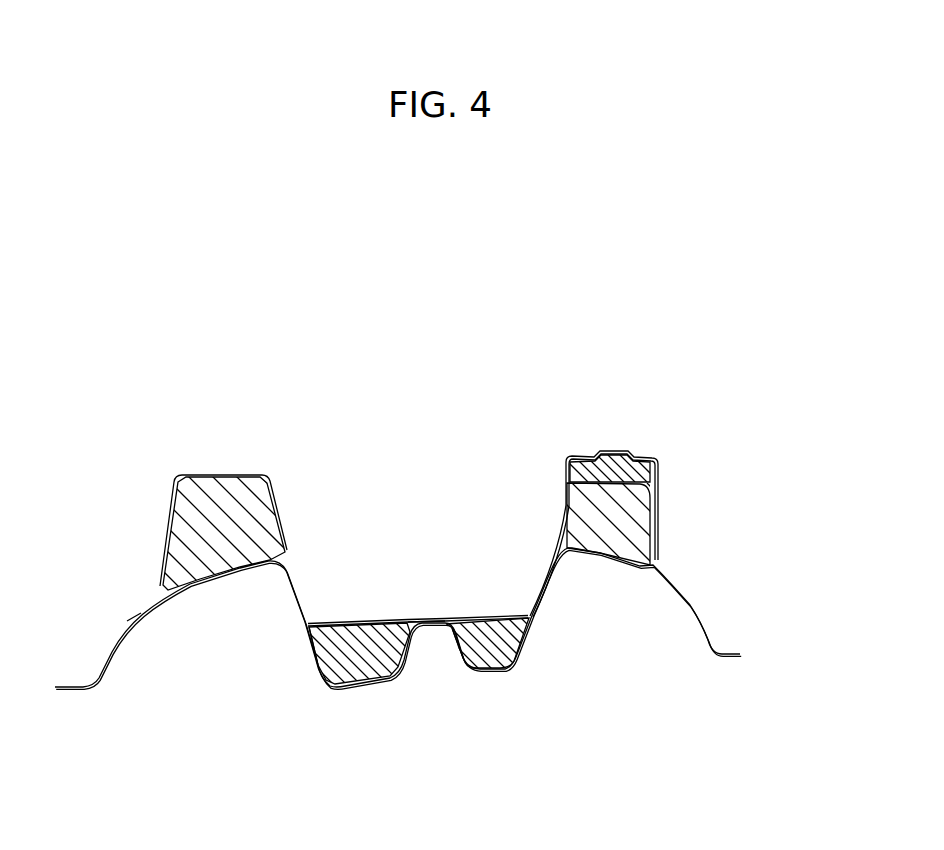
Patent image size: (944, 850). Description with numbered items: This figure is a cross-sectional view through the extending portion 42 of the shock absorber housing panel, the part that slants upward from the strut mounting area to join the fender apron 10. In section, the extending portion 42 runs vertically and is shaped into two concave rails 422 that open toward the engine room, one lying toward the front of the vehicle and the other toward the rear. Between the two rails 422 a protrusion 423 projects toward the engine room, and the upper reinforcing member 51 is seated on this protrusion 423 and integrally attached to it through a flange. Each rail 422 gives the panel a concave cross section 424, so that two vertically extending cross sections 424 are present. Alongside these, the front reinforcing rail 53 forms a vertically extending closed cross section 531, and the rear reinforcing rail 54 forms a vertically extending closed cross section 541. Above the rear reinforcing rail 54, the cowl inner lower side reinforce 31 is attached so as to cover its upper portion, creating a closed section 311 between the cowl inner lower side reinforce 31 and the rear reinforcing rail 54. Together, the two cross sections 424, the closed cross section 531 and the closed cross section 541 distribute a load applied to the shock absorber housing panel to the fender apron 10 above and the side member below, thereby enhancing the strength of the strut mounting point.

The fender apron 10 is at (120, 640).
The cowl inner lower side reinforce 31 is at (622, 450).
The closed section 311 is at (596, 474).
The extending portion 42 is at (527, 676).
The rail 422 is at (348, 684).
The protrusion 423 is at (443, 626).
The concave cross section 424 is at (314, 663).
The upper reinforcing member 51 is at (444, 620).
The front reinforcing rail 53 is at (199, 477).
The closed cross section 531 is at (233, 530).
The rear reinforcing rail 54 is at (658, 482).
The closed cross section 541 is at (620, 536).